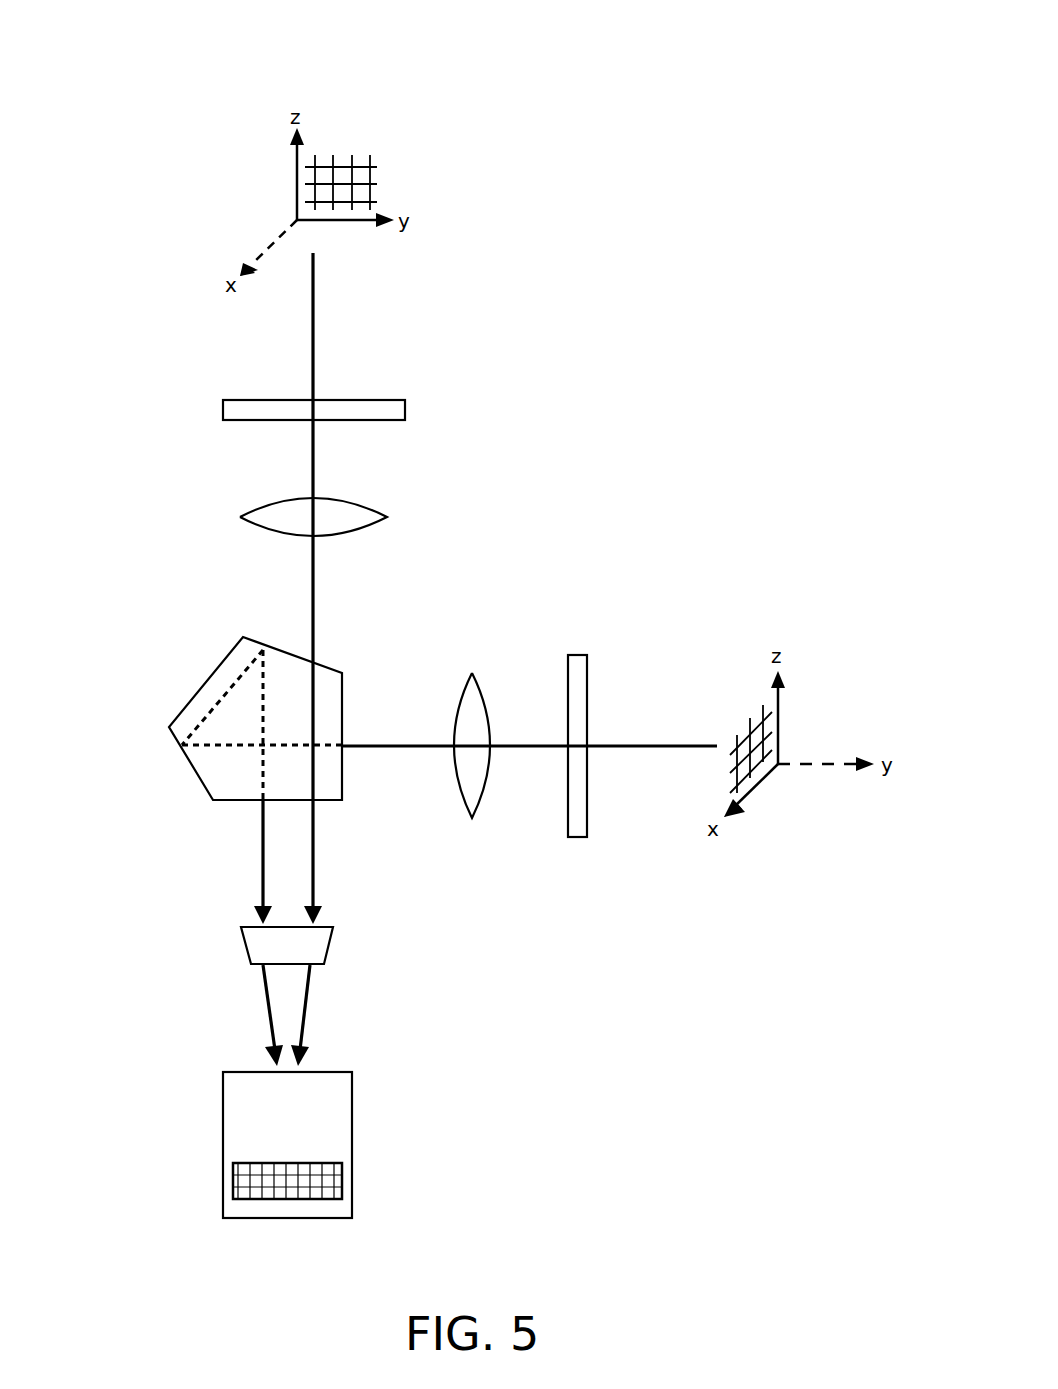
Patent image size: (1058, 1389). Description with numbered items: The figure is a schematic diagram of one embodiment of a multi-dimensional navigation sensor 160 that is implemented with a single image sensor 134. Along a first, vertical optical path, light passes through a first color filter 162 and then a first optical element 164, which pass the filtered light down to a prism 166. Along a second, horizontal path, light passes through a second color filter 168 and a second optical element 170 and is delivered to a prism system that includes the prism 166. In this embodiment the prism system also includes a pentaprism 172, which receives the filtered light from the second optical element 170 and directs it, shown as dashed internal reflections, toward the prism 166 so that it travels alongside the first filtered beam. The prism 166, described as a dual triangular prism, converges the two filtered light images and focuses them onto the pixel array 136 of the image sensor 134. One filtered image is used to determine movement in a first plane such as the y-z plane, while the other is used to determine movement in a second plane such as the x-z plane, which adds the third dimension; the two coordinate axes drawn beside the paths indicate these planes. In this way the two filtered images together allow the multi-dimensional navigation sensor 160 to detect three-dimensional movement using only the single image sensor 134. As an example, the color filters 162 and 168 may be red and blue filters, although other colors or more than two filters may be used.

The multi-dimensional navigation sensor 160 is at (188, 44).
The first color filter 162 is at (390, 400).
The first optical element 164 is at (372, 505).
The prism 166 is at (330, 940).
The second color filter 168 is at (590, 820).
The second optical element 170 is at (483, 797).
The pentaprism 172 is at (197, 691).
The image sensor 134 is at (352, 1107).
The pixel array 136 is at (342, 1190).